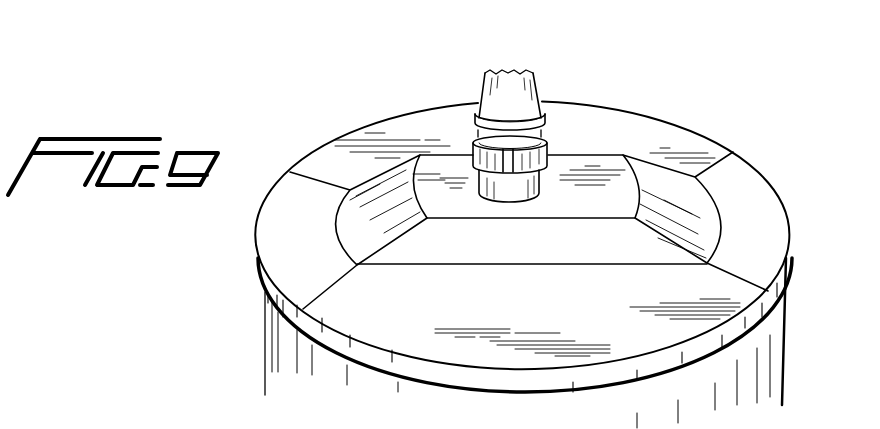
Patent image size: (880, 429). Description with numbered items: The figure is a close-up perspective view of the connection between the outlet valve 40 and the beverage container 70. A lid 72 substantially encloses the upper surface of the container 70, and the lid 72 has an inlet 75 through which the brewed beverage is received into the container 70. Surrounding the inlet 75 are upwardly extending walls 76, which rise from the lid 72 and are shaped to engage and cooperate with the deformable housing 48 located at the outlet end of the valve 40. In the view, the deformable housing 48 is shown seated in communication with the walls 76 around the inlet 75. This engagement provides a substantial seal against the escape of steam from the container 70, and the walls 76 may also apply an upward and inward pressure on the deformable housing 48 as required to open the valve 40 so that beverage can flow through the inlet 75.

The valve 40 is at (530, 84).
The deformable housing 48 is at (538, 129).
The container 70 is at (283, 377).
The lid 72 is at (278, 232).
The inlet 75 is at (512, 204).
The upwardly extending walls 76 is at (498, 178).